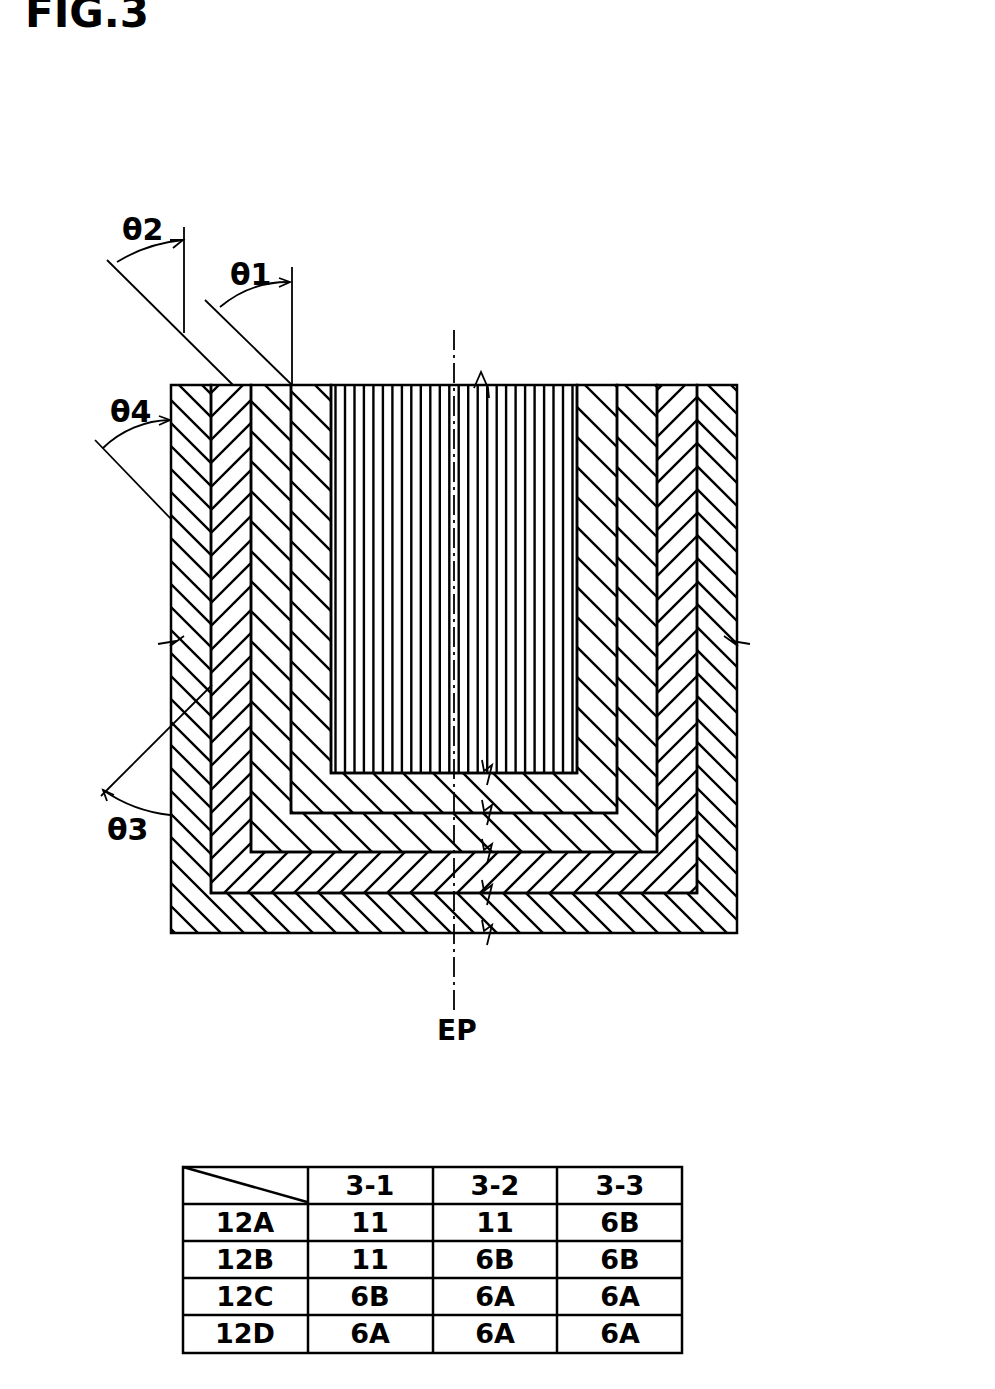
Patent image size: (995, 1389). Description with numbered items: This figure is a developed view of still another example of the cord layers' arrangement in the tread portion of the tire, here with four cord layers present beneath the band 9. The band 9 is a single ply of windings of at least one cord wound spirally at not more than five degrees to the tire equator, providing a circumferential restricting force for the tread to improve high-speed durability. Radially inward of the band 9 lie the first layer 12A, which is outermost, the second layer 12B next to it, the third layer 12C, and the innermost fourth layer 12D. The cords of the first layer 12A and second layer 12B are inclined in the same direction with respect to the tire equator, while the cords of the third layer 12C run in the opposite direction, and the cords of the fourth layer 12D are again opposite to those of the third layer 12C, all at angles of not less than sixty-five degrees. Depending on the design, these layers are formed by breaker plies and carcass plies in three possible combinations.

The band 9 is at (514, 385).
The first layer 12A is at (598, 432).
The second layer 12B is at (640, 487).
The third layer 12C is at (682, 533).
The fourth layer 12D is at (718, 595).